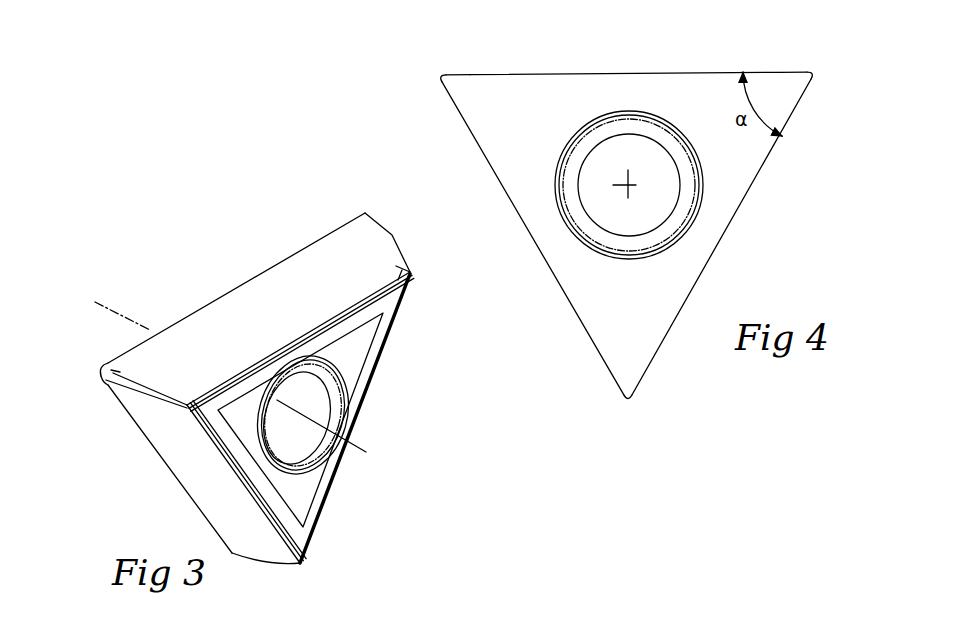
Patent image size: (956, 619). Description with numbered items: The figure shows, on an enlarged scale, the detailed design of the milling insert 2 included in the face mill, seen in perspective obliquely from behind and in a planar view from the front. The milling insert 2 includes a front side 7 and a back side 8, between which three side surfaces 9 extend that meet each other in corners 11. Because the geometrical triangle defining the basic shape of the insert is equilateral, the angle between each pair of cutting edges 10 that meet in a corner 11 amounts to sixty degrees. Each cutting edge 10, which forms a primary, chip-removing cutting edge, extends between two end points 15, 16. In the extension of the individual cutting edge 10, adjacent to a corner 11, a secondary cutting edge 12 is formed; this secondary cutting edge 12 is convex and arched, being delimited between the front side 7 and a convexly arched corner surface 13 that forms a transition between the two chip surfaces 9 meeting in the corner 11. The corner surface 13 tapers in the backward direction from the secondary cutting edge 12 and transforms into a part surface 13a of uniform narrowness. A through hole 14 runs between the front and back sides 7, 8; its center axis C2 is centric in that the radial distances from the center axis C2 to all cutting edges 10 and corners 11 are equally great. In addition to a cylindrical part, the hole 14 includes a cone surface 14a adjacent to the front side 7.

In FIG. 3, the milling insert 2 is at (208, 266).
In FIG. 4, the milling insert 2 is at (555, 320).
In FIG. 4, the front side 7 is at (636, 322).
In FIG. 3, the back side 8 is at (362, 393).
In FIG. 3, the side surface 9 is at (270, 319).
In FIG. 3, the cutting edge 10 is at (276, 265).
In FIG. 4, the cutting edge 10 is at (595, 72).
In FIG. 3, the corner 11 is at (404, 238).
In FIG. 4, the corner 11 is at (430, 72).
In FIG. 3, the secondary cutting edge 12 is at (104, 366).
In FIG. 3, the corner surface 13 is at (107, 384).
In FIG. 3, the part surface 13a is at (150, 393).
In FIG. 3, the through hole 14 is at (290, 433).
In FIG. 4, the cone surface 14a is at (575, 150).
In FIG. 4, the end point 15 is at (447, 74).
In FIG. 4, the end point 16 is at (810, 72).
In FIG. 3, the center axis C2 is at (357, 452).
In FIG. 4, the center axis C2 is at (631, 184).